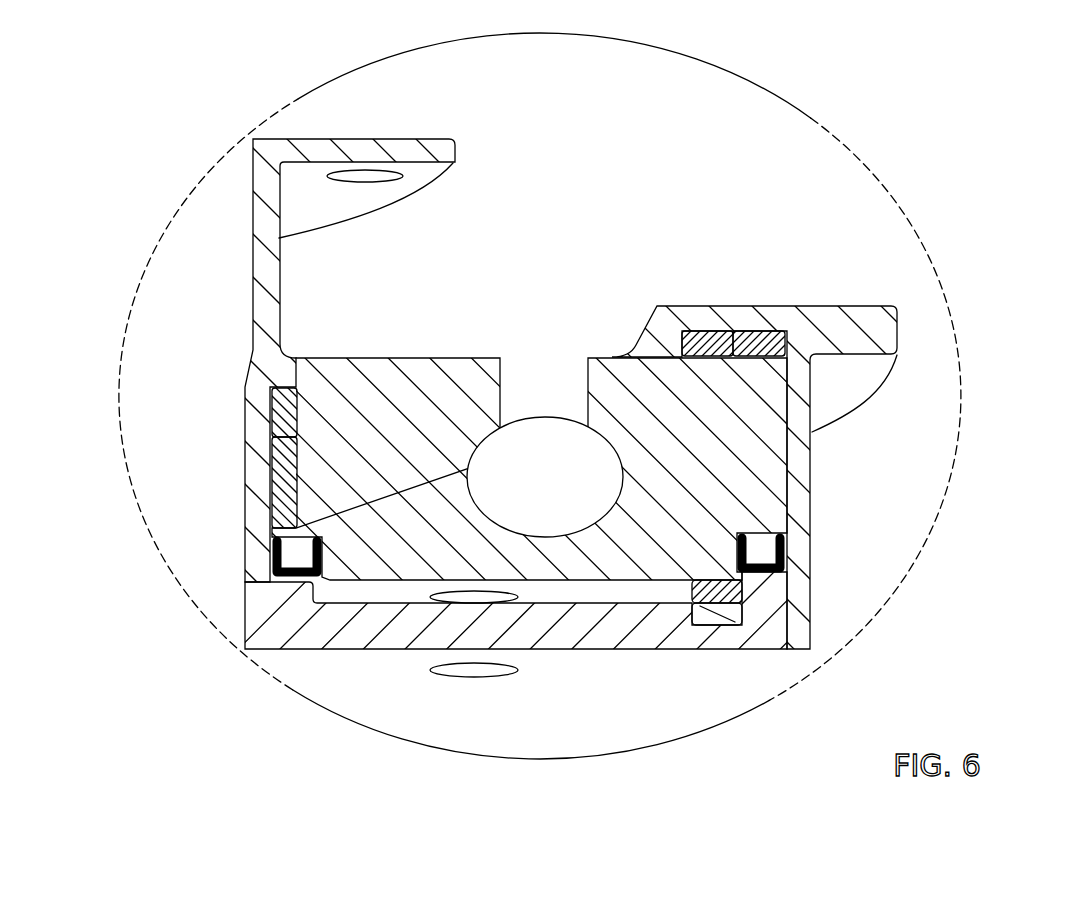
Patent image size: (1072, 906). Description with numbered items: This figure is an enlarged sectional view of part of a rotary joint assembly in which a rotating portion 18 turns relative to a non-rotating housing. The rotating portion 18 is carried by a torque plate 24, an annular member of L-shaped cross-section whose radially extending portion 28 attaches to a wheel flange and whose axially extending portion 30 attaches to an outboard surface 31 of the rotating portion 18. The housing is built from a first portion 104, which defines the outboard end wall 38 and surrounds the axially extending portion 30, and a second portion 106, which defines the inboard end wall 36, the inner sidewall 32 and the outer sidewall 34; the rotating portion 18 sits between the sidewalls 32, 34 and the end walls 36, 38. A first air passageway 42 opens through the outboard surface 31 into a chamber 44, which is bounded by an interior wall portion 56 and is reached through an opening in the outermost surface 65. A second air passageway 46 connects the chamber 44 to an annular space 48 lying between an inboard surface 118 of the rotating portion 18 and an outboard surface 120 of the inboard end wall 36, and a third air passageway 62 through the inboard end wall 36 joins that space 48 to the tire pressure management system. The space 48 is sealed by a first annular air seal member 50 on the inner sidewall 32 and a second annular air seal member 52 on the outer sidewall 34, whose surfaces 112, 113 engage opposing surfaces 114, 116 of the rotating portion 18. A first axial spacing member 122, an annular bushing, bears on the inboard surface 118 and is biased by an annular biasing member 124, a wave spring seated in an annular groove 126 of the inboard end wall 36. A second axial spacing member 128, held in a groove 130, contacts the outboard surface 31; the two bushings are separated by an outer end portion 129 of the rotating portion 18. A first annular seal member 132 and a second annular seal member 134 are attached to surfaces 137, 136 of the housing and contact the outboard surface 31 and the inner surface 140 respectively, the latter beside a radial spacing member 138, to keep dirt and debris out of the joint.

The rotating portion 18 is at (632, 625).
The torque plate 24 is at (397, 148).
The radially extending portion 28 is at (437, 139).
The axially extending portion 30 is at (280, 285).
The outboard surface 31 is at (765, 320).
The inner sidewall 32 is at (252, 420).
The outer sidewall 34 is at (797, 390).
The inboard end wall 36 is at (690, 628).
The outboard end wall 38 is at (668, 307).
The first air passageway 42 is at (587, 393).
The chamber 44 is at (503, 458).
The second air passageway 46 is at (478, 602).
The space 48 is at (410, 595).
The first annular air seal member 50 is at (275, 550).
The second annular air seal member 52 is at (785, 580).
The interior wall portion 56 is at (628, 560).
The third air passageway 62 is at (474, 676).
The outermost surface 65 is at (787, 447).
The first portion 104 is at (835, 305).
The second portion 106 is at (745, 632).
The surface 112 is at (292, 560).
The surface 113 is at (784, 563).
The opposing surface 114 is at (310, 580).
The opposing surface 116 is at (784, 548).
The inboard surface 118 is at (530, 600).
The outboard surface 120 is at (558, 588).
The first axial spacing member 122 is at (790, 608).
The annular biasing member 124 is at (828, 638).
The annular groove 126 is at (790, 623).
The second axial spacing member 128 is at (750, 345).
The outer end portion 129 is at (770, 480).
The groove 130 is at (788, 330).
The first annular seal member 132 is at (700, 345).
The second annular seal member 134 is at (330, 372).
The surface 136 is at (250, 390).
The surface 137 is at (720, 310).
The radial spacing member 138 is at (287, 460).
The inner surface 140 is at (275, 440).